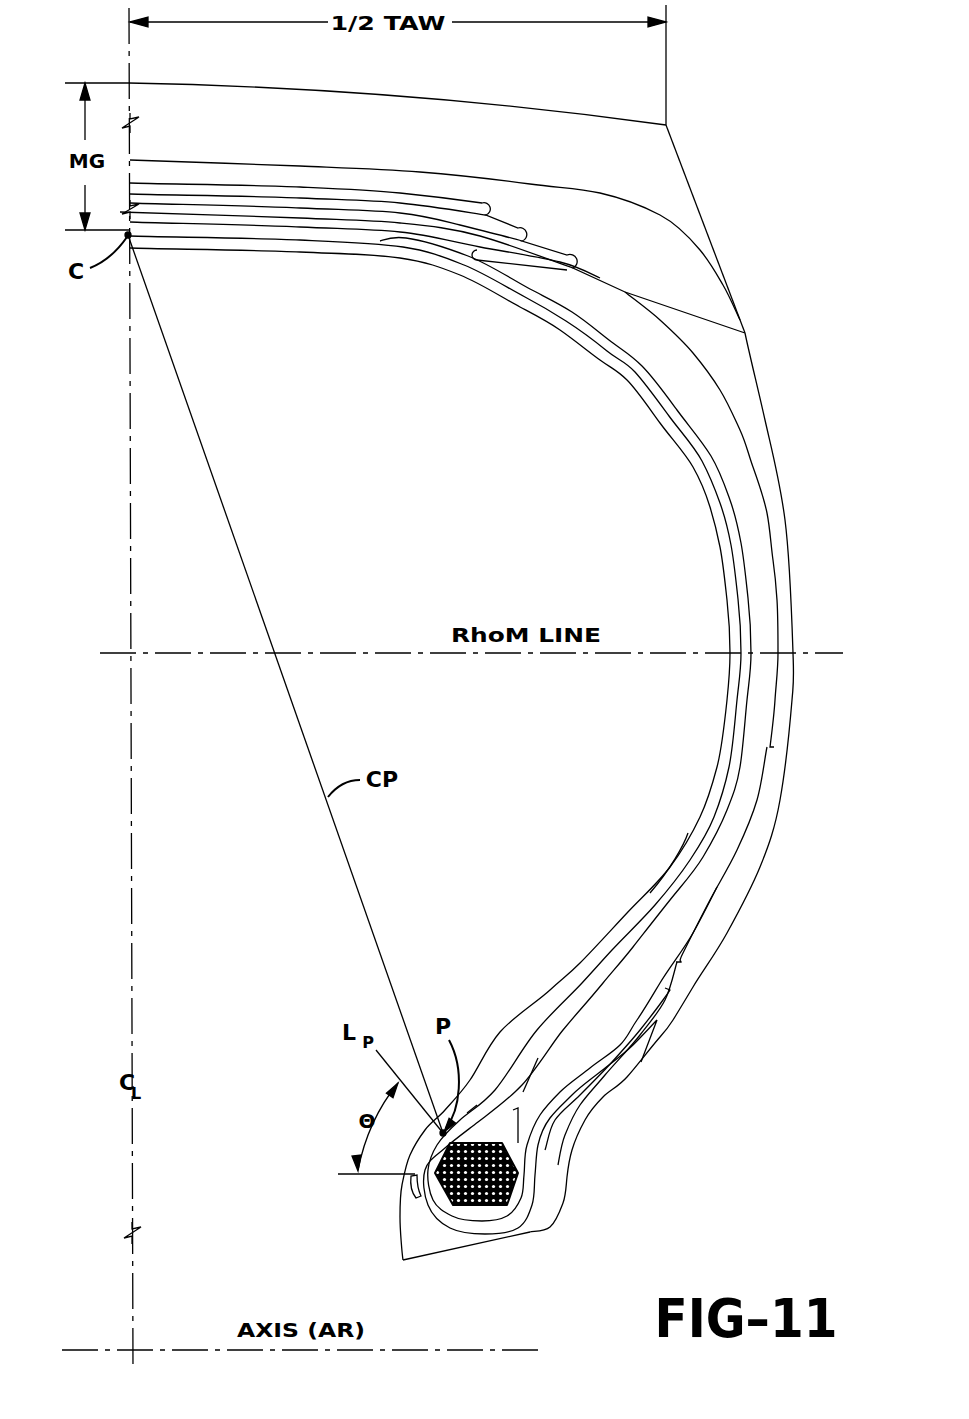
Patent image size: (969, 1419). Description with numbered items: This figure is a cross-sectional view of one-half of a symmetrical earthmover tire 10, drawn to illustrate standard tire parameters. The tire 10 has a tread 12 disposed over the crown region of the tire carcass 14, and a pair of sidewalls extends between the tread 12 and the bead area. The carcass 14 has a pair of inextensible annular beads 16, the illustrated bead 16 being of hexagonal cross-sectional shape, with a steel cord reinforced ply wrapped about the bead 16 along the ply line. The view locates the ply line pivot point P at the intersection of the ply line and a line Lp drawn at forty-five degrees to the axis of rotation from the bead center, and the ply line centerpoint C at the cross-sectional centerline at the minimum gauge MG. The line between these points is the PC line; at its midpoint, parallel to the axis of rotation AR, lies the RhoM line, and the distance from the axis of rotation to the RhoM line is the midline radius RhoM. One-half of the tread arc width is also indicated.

The tire 10 is at (785, 312).
The tread 12 is at (510, 135).
The tire carcass 14 is at (600, 975).
The bead 16 is at (490, 1205).